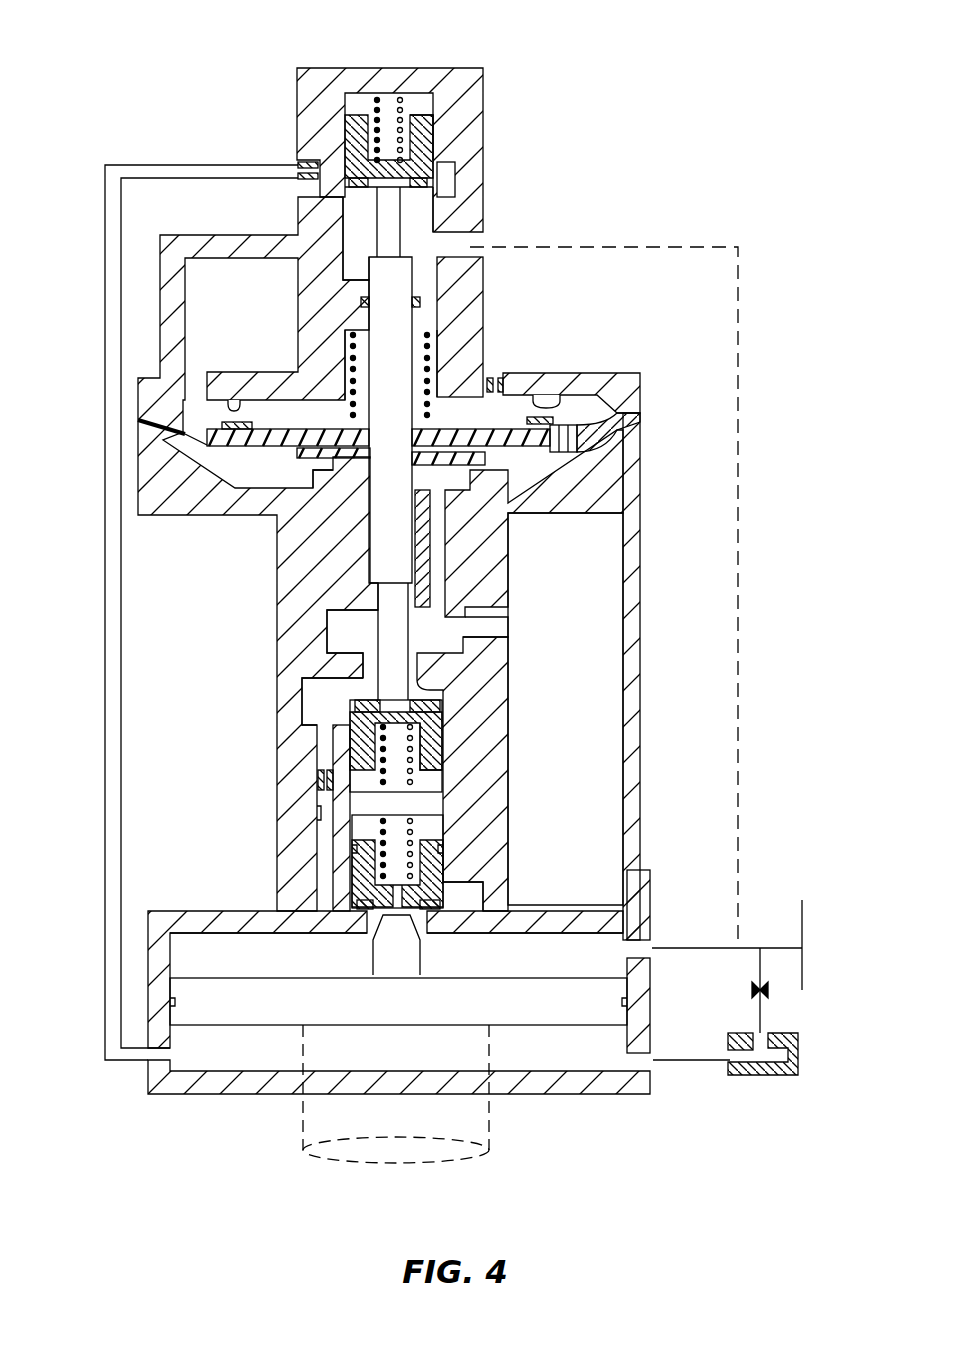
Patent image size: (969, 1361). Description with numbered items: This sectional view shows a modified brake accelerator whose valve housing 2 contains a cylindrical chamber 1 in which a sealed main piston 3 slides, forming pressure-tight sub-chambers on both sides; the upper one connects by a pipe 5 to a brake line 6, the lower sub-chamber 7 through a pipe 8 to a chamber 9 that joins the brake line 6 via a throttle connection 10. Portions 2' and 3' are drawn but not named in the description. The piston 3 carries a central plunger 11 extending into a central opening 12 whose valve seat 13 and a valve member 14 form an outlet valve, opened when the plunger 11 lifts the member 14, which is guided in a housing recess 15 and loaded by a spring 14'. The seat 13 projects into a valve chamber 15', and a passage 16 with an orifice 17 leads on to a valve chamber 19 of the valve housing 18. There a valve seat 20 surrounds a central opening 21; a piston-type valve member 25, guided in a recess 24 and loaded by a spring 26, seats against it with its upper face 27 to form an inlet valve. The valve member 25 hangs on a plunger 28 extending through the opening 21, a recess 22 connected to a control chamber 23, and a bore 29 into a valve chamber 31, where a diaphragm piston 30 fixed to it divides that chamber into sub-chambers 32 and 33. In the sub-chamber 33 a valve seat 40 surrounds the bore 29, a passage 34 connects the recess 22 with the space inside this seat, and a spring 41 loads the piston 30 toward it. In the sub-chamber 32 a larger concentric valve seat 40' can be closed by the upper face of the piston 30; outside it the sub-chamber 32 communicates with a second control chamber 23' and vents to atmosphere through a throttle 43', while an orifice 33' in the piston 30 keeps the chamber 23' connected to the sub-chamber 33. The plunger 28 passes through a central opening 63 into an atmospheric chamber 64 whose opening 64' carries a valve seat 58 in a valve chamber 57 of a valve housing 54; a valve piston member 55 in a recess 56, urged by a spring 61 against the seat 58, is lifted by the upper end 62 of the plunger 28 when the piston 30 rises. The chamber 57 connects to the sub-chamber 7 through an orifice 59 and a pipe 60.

The cylindrical chamber 1 is at (170, 950).
The valve housing 2 is at (257, 956).
The cylinder end cap 2' is at (569, 1002).
The main piston 3 is at (398, 980).
The piston rod 3' is at (370, 1094).
The pipe 5 is at (678, 948).
The brake line 6 is at (802, 900).
The sub-chamber 7 is at (590, 1060).
The pipe 8 is at (686, 1061).
The chamber 9 is at (760, 1075).
The throttle connection 10 is at (755, 990).
The plunger 11 is at (385, 964).
The central opening 12 is at (425, 908).
The valve seat 13 is at (448, 914).
The valve member 14 is at (457, 861).
The spring 14' is at (325, 849).
The housing recess 15 is at (448, 855).
The valve chamber 15' is at (525, 935).
The passage 16 is at (318, 815).
The orifice 17 is at (318, 782).
The valve housing 18 is at (654, 718).
The valve chamber 19 is at (302, 700).
The valve seat 20 is at (428, 684).
The central opening 21 is at (375, 655).
The recess 22 is at (497, 620).
The control chamber 23 is at (574, 676).
The second control chamber 23' is at (258, 554).
The cylindrical recess 24 is at (440, 797).
The valve member 25 is at (435, 750).
The spring 26 is at (365, 772).
The upper face 27 is at (440, 716).
The plunger 28 is at (376, 522).
The central bore 29 is at (375, 540).
The diaphragm piston 30 is at (522, 485).
The valve chamber 31 is at (205, 488).
The upper sub-chamber 32 is at (265, 400).
The lower sub-chamber 33 is at (534, 523).
The orifice 33' is at (583, 423).
The passage 34 is at (440, 572).
The valve seat 40 is at (294, 474).
The valve seat 40' is at (571, 369).
The spring 41 is at (427, 380).
The throttle 43' is at (476, 399).
The valve housing 54 is at (483, 122).
The valve piston member 55 is at (357, 118).
The cylindrical recess 56 is at (427, 112).
The valve chamber 57 is at (450, 188).
The valve seat 58 is at (358, 210).
The orifice 59 is at (300, 166).
The pipe 60 is at (185, 165).
The spring 61 is at (380, 105).
The upper end 62 is at (393, 258).
The central opening 63 is at (414, 305).
The chamber 64 is at (479, 327).
The central opening 64' is at (569, 565).